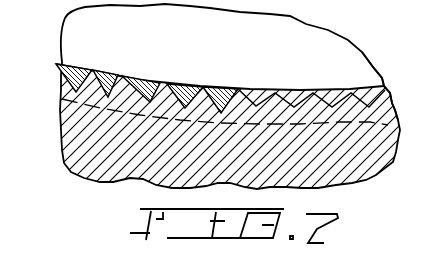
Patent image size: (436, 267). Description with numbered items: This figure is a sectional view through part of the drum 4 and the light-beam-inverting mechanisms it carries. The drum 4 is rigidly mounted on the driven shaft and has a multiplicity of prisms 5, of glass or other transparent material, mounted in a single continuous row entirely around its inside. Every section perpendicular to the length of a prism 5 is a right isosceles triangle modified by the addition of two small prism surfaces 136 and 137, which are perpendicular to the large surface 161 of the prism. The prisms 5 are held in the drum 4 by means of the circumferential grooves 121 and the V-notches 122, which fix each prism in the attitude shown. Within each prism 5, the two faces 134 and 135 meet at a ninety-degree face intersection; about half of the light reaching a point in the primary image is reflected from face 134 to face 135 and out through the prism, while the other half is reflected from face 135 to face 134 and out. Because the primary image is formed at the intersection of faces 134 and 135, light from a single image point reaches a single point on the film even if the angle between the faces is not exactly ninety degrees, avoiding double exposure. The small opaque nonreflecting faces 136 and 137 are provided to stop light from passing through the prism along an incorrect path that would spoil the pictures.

The drum 4 is at (392, 131).
The prism 5 is at (184, 88).
The circumferential groove 121 is at (390, 107).
The V-notch 122 is at (288, 104).
The prism face 134 is at (118, 78).
The prism face 135 is at (110, 72).
The small prism surface 136 is at (140, 80).
The small prism surface 137 is at (67, 67).
The large surface 161 is at (103, 71).